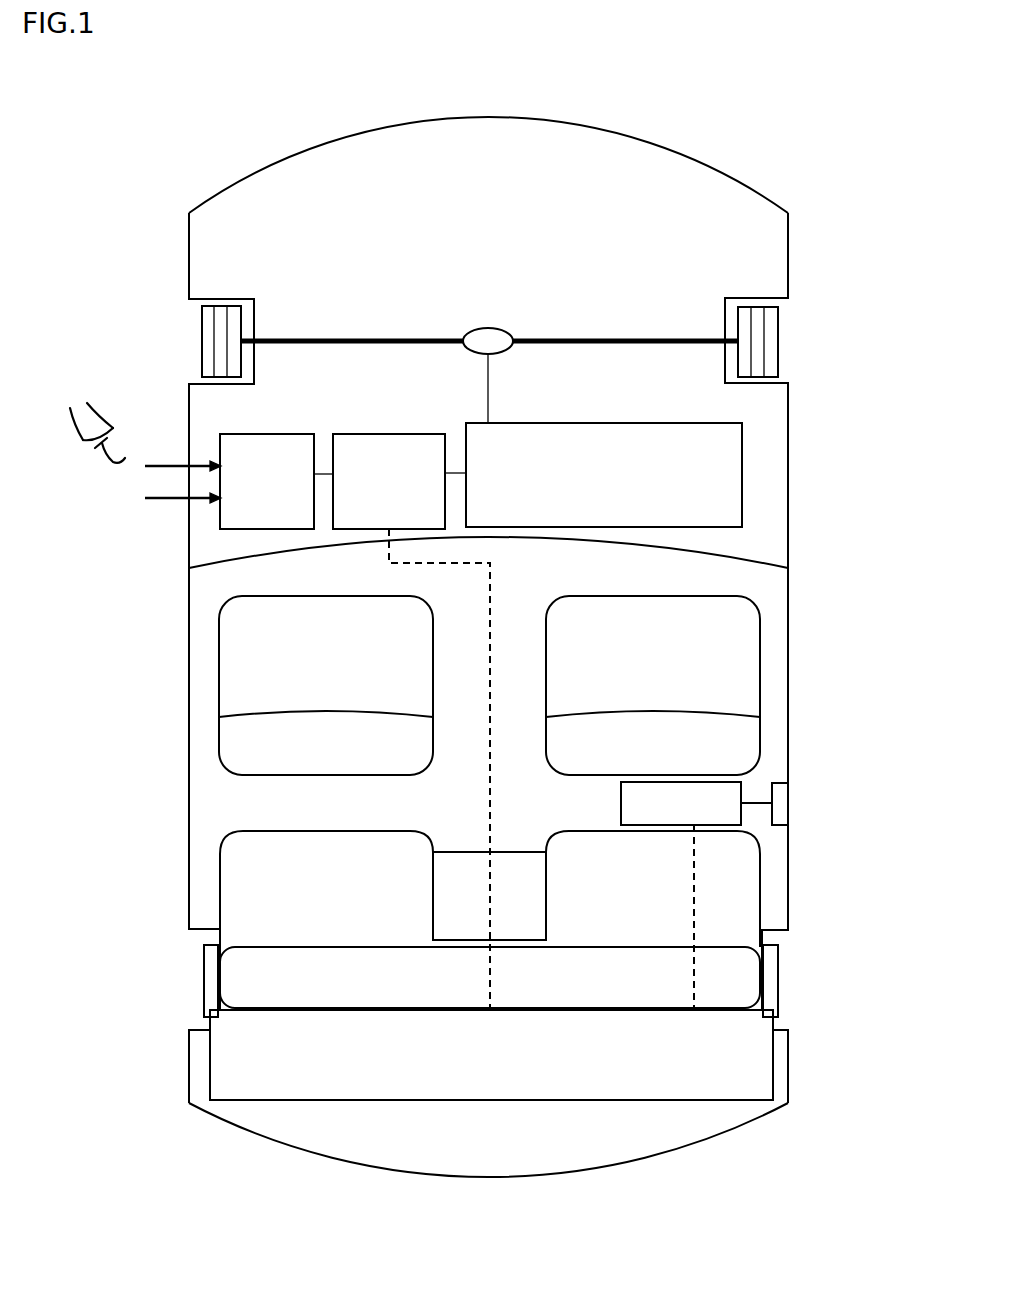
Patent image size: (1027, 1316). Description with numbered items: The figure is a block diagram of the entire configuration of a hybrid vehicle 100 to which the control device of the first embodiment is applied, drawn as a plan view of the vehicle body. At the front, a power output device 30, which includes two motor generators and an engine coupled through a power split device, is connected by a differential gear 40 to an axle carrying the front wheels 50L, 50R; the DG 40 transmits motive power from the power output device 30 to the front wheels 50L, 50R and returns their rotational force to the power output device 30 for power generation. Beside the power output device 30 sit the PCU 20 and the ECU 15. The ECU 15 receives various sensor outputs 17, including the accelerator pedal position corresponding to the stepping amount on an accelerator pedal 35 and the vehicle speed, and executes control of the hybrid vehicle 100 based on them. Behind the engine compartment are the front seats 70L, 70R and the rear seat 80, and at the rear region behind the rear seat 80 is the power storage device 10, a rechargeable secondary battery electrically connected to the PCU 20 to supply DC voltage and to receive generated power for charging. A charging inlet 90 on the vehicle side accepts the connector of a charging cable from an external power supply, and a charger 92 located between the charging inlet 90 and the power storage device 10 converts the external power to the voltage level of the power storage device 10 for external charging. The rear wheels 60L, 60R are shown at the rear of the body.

The hybrid vehicle 100 is at (509, 78).
The power storage device 10 is at (492, 1088).
The ECU 15 is at (285, 443).
The various sensor outputs 17 is at (166, 457).
The PCU 20 is at (360, 443).
The power output device 30 is at (689, 435).
The accelerator pedal 35 is at (115, 455).
The differential gear 40 is at (486, 327).
The front wheel 50L is at (212, 341).
The front wheel 50R is at (771, 341).
The rear wheel 60L is at (212, 980).
The rear wheel 60R is at (772, 980).
The front seat 70L is at (326, 607).
The front seat 70R is at (655, 607).
The rear seat 80 is at (327, 840).
The charging inlet 90 is at (780, 803).
The charger 92 is at (743, 787).